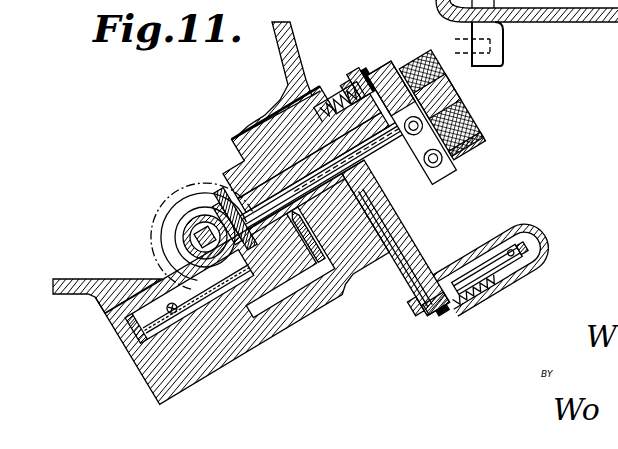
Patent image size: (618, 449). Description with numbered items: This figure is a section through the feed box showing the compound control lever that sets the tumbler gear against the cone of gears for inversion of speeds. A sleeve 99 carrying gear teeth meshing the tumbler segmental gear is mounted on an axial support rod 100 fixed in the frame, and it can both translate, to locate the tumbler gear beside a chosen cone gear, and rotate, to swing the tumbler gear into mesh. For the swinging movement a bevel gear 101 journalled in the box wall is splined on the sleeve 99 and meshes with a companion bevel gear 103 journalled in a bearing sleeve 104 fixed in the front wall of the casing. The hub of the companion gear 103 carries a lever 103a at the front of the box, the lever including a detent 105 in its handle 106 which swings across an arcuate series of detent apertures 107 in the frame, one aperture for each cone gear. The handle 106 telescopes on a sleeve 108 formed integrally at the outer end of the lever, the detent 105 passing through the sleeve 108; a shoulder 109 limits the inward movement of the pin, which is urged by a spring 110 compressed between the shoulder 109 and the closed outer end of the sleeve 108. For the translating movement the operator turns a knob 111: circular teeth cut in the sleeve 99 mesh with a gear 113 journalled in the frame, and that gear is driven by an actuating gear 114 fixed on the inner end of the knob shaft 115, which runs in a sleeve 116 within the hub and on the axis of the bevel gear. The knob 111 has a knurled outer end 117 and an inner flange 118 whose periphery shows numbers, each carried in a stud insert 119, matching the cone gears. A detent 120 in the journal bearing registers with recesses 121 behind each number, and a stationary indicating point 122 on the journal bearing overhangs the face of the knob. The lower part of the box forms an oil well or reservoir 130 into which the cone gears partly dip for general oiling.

The sleeve 99 is at (188, 233).
The axial support rod 100 is at (192, 241).
The bevel gear 101 is at (163, 202).
The companion bevel gear 103 is at (228, 160).
The lever 103a is at (420, 232).
The bearing sleeve 104 is at (263, 173).
The detent 105 is at (420, 315).
The handle 106 is at (537, 268).
The detent apertures 107 is at (427, 330).
The sleeve 108 is at (487, 296).
The shoulder 109 is at (437, 333).
The spring 110 is at (460, 303).
The knob 111 is at (424, 54).
The gear 113 is at (252, 307).
The actuating gear 114 is at (220, 193).
The knob shaft 115 is at (302, 176).
The sleeve 116 is at (385, 178).
The knurled outer end 117 is at (480, 143).
The inner flange 118 is at (450, 168).
The stud insert 119 is at (358, 90).
The detent 120 is at (366, 92).
The recesses 121 is at (359, 86).
The stationary indicating point 122 is at (367, 92).
The well or reservoir 130 is at (537, 18).